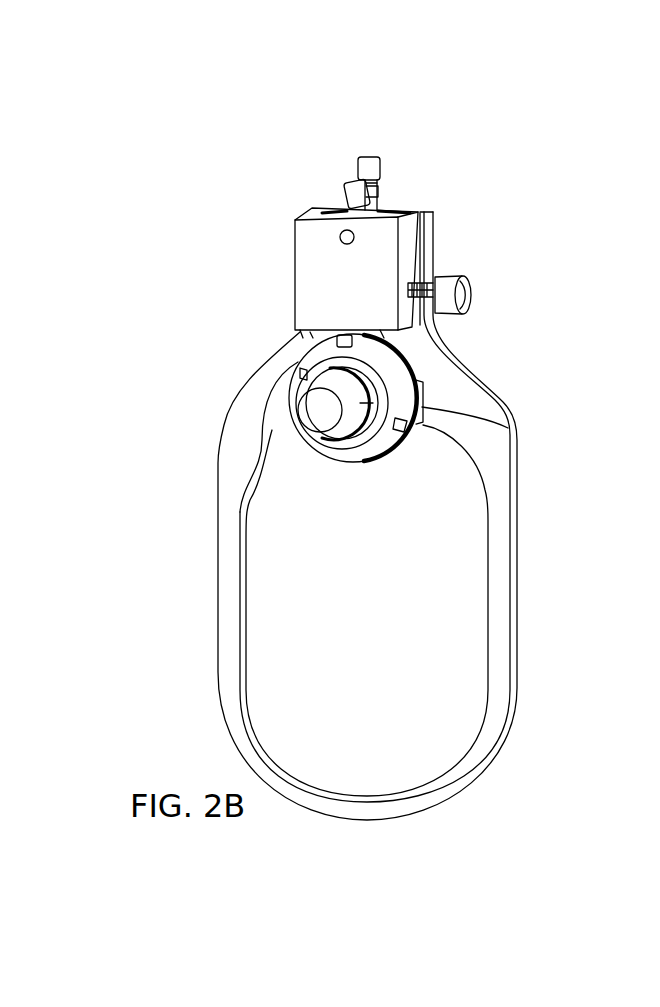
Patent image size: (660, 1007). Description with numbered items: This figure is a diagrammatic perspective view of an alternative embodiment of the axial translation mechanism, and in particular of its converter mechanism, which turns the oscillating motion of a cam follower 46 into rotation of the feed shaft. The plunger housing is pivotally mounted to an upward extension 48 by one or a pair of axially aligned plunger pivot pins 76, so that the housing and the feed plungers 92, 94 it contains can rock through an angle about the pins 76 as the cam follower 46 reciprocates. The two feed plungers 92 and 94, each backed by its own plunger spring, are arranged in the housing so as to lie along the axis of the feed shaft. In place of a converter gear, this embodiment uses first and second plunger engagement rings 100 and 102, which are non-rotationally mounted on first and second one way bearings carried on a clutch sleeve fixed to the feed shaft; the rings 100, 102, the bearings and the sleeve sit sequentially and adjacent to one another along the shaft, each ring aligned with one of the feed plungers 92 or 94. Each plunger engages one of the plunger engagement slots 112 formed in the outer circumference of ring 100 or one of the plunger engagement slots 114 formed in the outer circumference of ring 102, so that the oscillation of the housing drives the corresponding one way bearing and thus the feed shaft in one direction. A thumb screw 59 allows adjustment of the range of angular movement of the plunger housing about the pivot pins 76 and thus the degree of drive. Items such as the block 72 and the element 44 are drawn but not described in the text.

The bag 44 is at (380, 631).
The cam follower 46 is at (510, 602).
The upward extension 48 is at (435, 235).
The thumb screw 59 is at (472, 287).
The block 72 is at (362, 301).
The plunger pivot pin 76 is at (340, 236).
The feed plunger 92 is at (347, 181).
The feed plunger 94 is at (368, 157).
The first plunger engagement ring 100 is at (364, 450).
The second plunger engagement ring 102 is at (510, 428).
The plunger engagement slot 112 is at (415, 432).
The plunger engagement slot 114 is at (420, 372).